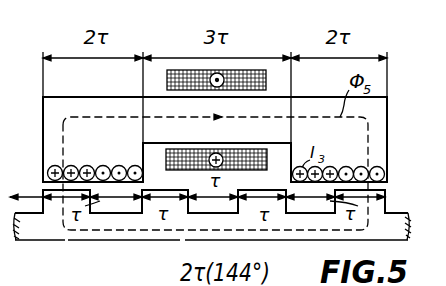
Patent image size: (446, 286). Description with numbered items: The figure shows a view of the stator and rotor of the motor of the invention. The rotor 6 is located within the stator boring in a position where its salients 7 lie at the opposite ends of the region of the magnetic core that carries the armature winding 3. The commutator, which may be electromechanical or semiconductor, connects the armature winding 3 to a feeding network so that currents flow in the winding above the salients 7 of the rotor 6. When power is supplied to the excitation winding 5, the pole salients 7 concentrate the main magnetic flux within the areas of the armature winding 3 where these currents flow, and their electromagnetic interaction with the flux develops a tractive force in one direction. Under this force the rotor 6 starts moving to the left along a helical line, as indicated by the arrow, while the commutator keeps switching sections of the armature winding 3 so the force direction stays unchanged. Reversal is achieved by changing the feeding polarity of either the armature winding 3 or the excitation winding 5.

The armature winding 3 is at (49, 166).
The excitation winding 5 is at (167, 78).
The rotor 6 is at (403, 213).
The salients 7 is at (387, 194).